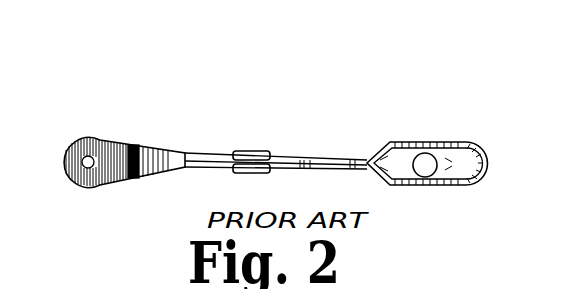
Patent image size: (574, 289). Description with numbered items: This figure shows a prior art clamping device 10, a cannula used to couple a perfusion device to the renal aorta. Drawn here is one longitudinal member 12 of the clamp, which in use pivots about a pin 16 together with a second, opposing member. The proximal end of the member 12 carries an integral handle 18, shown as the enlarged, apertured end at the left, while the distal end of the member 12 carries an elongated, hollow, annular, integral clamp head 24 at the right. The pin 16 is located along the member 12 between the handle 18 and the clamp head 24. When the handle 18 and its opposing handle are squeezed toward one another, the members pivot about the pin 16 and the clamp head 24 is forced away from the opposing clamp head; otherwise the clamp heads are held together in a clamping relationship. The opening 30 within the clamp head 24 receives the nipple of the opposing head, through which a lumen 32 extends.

The clamping device 10 is at (200, 104).
The longitudinal member 12 is at (305, 158).
The pin 16 is at (250, 152).
The handle 18 is at (83, 137).
The clamp head 24 is at (478, 153).
The inner slot 30 is at (402, 157).
The lumen 32 is at (430, 153).